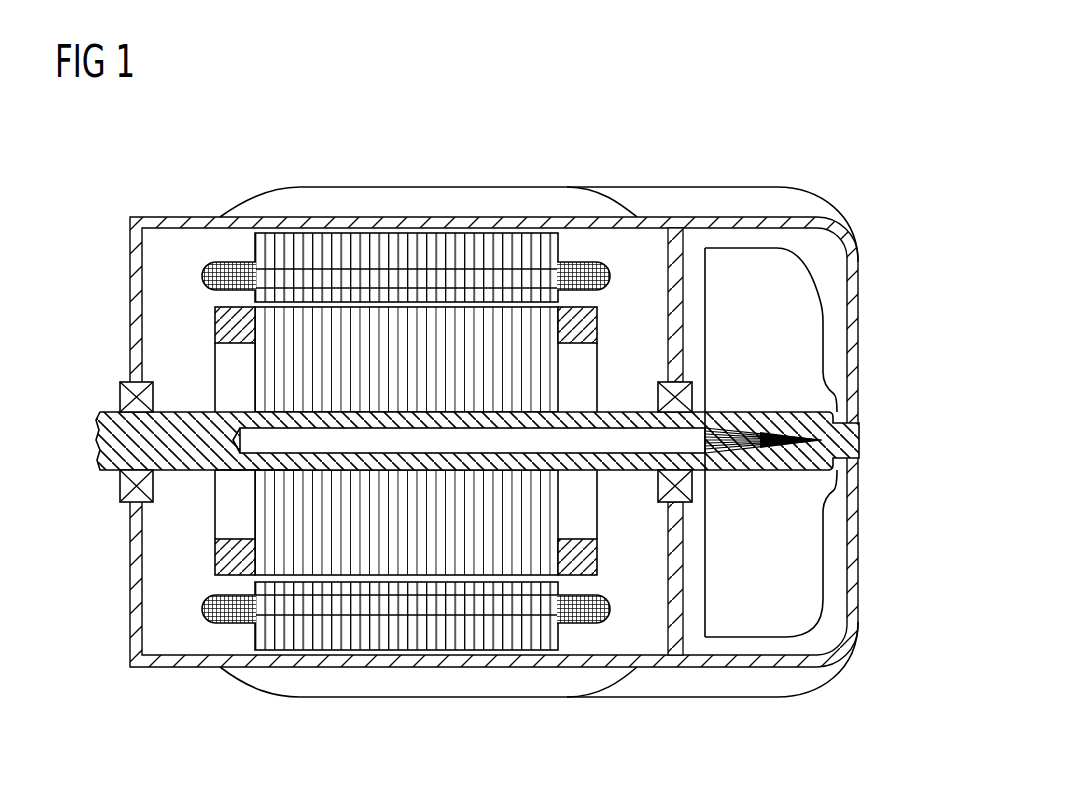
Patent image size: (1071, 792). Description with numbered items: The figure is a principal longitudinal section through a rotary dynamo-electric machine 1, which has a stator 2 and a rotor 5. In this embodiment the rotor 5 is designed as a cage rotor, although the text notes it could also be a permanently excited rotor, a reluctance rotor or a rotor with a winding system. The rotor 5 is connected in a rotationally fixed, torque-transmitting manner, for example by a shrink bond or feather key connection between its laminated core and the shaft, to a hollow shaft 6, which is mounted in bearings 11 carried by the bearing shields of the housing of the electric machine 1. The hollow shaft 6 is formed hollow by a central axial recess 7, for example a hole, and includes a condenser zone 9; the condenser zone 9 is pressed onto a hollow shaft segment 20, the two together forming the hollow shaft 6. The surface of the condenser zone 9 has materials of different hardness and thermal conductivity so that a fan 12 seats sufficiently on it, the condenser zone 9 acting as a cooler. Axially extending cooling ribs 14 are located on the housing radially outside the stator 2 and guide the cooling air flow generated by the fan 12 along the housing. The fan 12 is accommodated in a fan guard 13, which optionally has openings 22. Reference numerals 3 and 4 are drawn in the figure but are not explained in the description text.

The dynamo-electric rotary machine 1 is at (812, 164).
The stator 2 is at (428, 245).
The winding head 3 is at (592, 252).
The winding head 4 is at (218, 262).
The rotor 5 is at (263, 522).
The hollow shaft 6 is at (167, 416).
The central axial recess 7 is at (640, 447).
The condenser zone 9 is at (767, 415).
The bearings 11 is at (120, 390).
The fan 12 is at (795, 565).
The fan guard 13 is at (848, 524).
The cooling ribs 14 is at (318, 200).
The hollow shaft segment 20 is at (262, 466).
The openings 22 is at (748, 217).